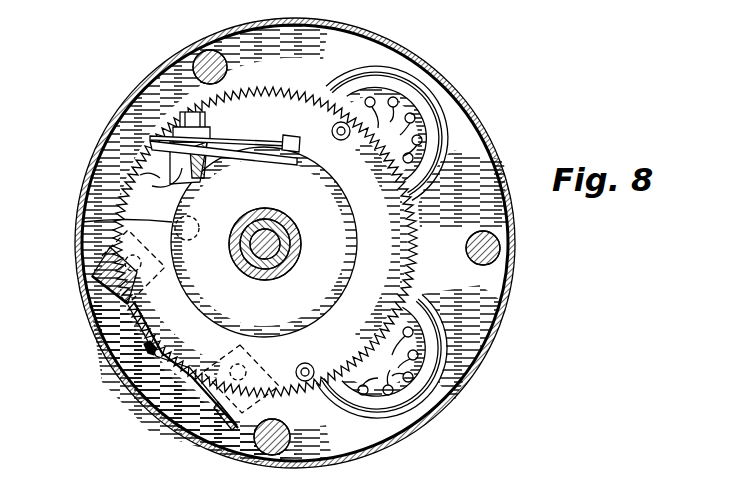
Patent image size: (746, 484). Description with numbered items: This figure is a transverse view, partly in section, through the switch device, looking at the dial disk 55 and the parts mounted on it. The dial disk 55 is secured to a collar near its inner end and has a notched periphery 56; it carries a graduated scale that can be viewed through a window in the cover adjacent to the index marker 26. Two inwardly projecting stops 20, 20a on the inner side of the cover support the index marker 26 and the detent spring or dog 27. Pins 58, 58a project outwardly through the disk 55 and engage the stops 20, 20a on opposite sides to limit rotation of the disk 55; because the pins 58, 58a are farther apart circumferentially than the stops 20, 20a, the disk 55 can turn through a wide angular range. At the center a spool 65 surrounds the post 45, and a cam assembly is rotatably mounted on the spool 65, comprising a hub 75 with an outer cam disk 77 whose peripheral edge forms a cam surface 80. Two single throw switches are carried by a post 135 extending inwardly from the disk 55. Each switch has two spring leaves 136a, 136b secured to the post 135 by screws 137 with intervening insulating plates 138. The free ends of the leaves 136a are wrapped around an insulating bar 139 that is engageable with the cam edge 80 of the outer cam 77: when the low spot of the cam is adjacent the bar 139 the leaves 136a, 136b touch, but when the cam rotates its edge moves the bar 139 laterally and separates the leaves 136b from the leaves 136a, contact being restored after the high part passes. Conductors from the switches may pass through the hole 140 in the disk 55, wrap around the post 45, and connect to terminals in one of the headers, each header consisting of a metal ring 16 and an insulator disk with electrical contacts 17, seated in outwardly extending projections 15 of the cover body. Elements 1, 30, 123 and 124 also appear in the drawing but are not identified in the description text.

The housing 1 is at (441, 412).
The outwardly extending projection 15 is at (447, 118).
The metal ring 16 is at (402, 100).
The electrical contact 17 is at (390, 246).
The stop 20 is at (237, 354).
The stop 20a is at (144, 276).
The index marker 26 is at (146, 346).
The detent spring or dog 27 is at (150, 352).
The mounting posts 30 is at (206, 50).
The post 45 is at (285, 232).
The dial disk 55 is at (392, 286).
The notched periphery 56 is at (412, 266).
The pin 58 is at (308, 364).
The pin 58a is at (341, 122).
The spool 65 is at (299, 251).
The hub 75 is at (283, 277).
The outer cam disk 77 is at (240, 206).
The cam surface 80 is at (349, 182).
The member 123 is at (87, 475).
The member 124 is at (144, 478).
The post 135 is at (159, 194).
The spring leaf 136a is at (236, 150).
The spring leaf 136b is at (236, 150).
The screw 137 is at (184, 112).
The insulating plate 138 is at (150, 142).
The insulating bar 139 is at (294, 136).
The hole 140 is at (84, 221).